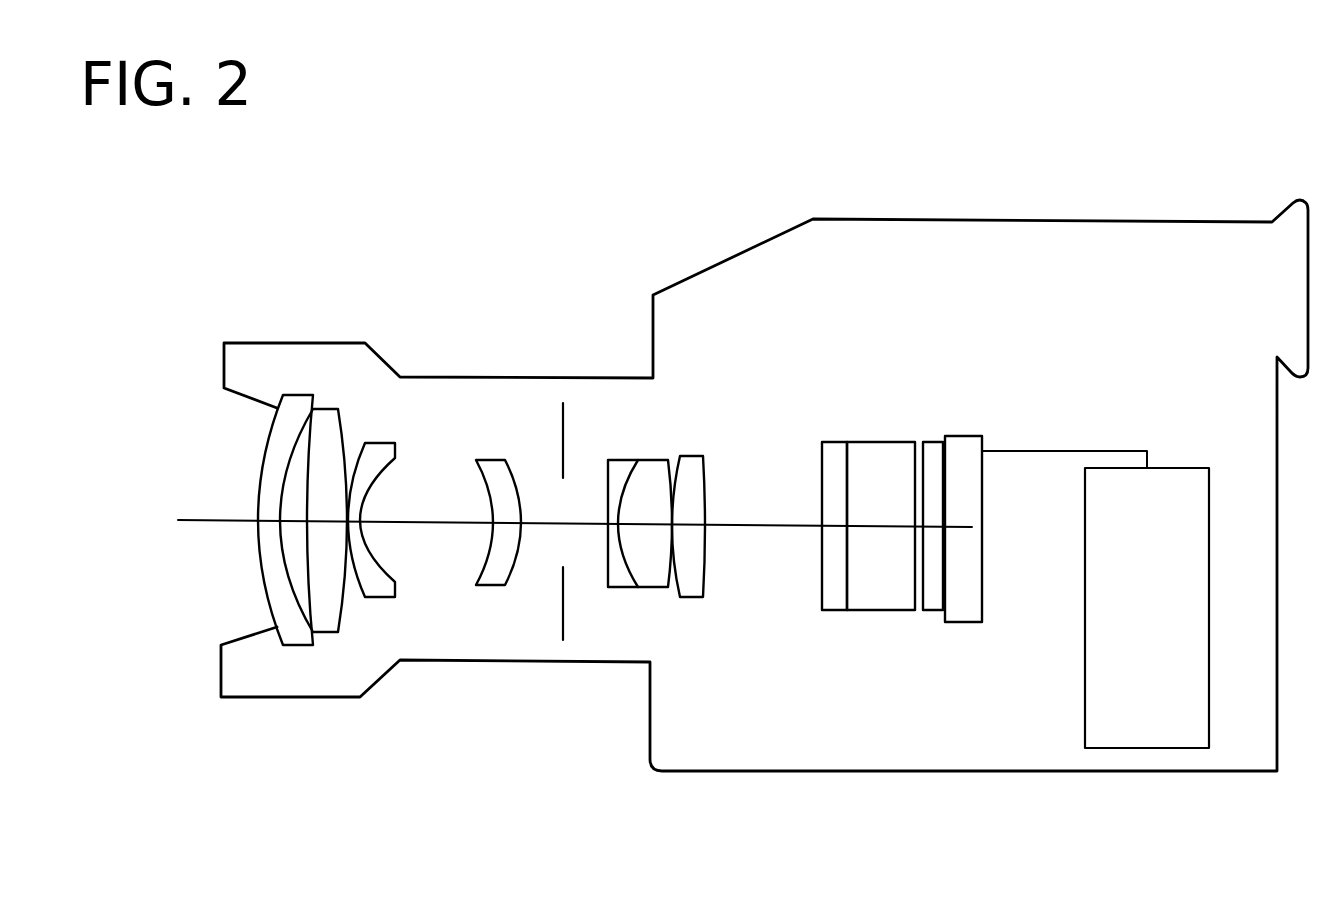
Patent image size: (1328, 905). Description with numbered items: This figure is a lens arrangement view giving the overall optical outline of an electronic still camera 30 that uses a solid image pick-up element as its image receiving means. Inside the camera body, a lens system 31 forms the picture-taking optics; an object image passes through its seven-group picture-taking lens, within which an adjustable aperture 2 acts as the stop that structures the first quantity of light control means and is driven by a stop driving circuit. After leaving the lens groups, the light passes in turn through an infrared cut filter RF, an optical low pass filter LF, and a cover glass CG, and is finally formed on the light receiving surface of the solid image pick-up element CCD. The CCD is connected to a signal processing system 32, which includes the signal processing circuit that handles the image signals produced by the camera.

The electronic still camera 30 is at (743, 235).
The lens system 31 is at (950, 390).
The adjustable aperture 2 is at (563, 608).
The infrared cut filter RF is at (825, 610).
The optical low pass filter LF is at (878, 610).
The cover glass CG is at (933, 610).
The solid image pick-up element CCD is at (960, 622).
The signal processing system 32 is at (1182, 467).